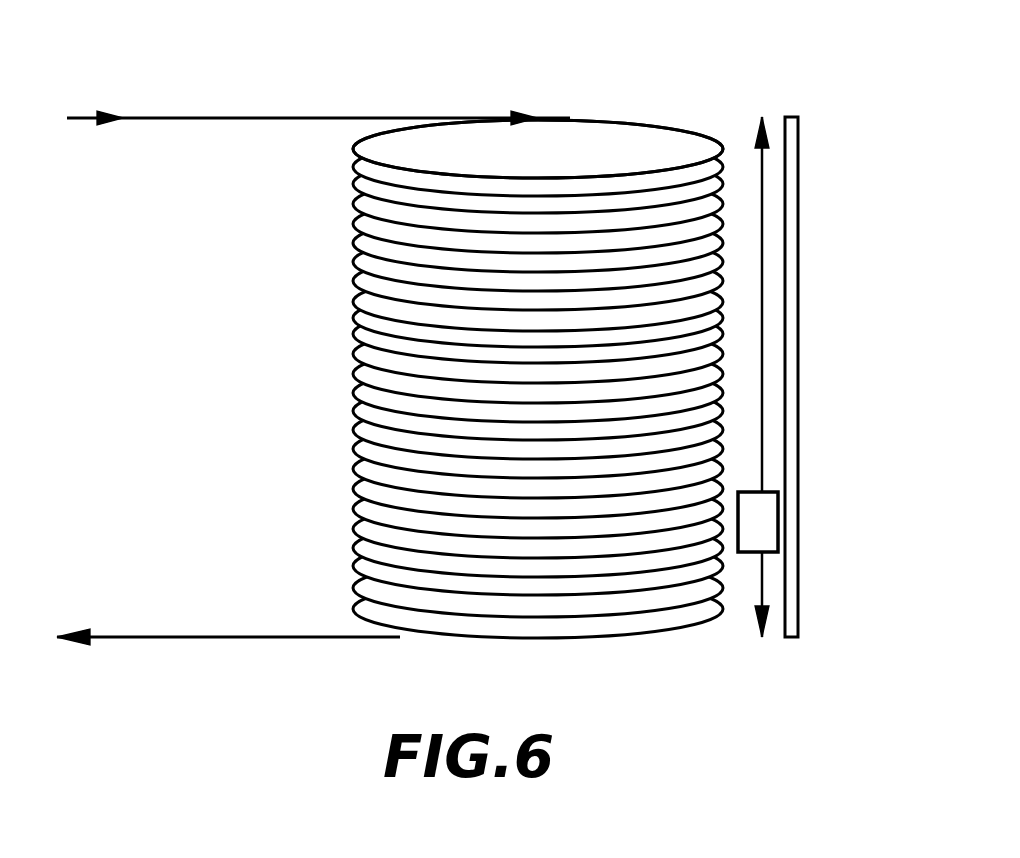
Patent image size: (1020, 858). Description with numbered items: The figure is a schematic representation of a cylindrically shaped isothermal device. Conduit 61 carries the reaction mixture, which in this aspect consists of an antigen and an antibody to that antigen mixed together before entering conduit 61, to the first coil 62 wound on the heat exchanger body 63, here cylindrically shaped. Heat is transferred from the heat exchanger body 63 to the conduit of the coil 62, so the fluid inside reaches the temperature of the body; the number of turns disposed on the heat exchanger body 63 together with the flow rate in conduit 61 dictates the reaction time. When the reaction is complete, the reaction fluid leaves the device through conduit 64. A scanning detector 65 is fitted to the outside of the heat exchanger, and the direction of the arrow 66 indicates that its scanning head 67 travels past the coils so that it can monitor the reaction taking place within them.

The conduit 61 is at (204, 118).
The first coil 62 is at (724, 140).
The heat exchanger body 63 is at (615, 137).
The conduit 64 is at (178, 637).
The scanning detector 65 is at (830, 190).
The arrow 66 is at (762, 284).
The scanning head 67 is at (778, 512).